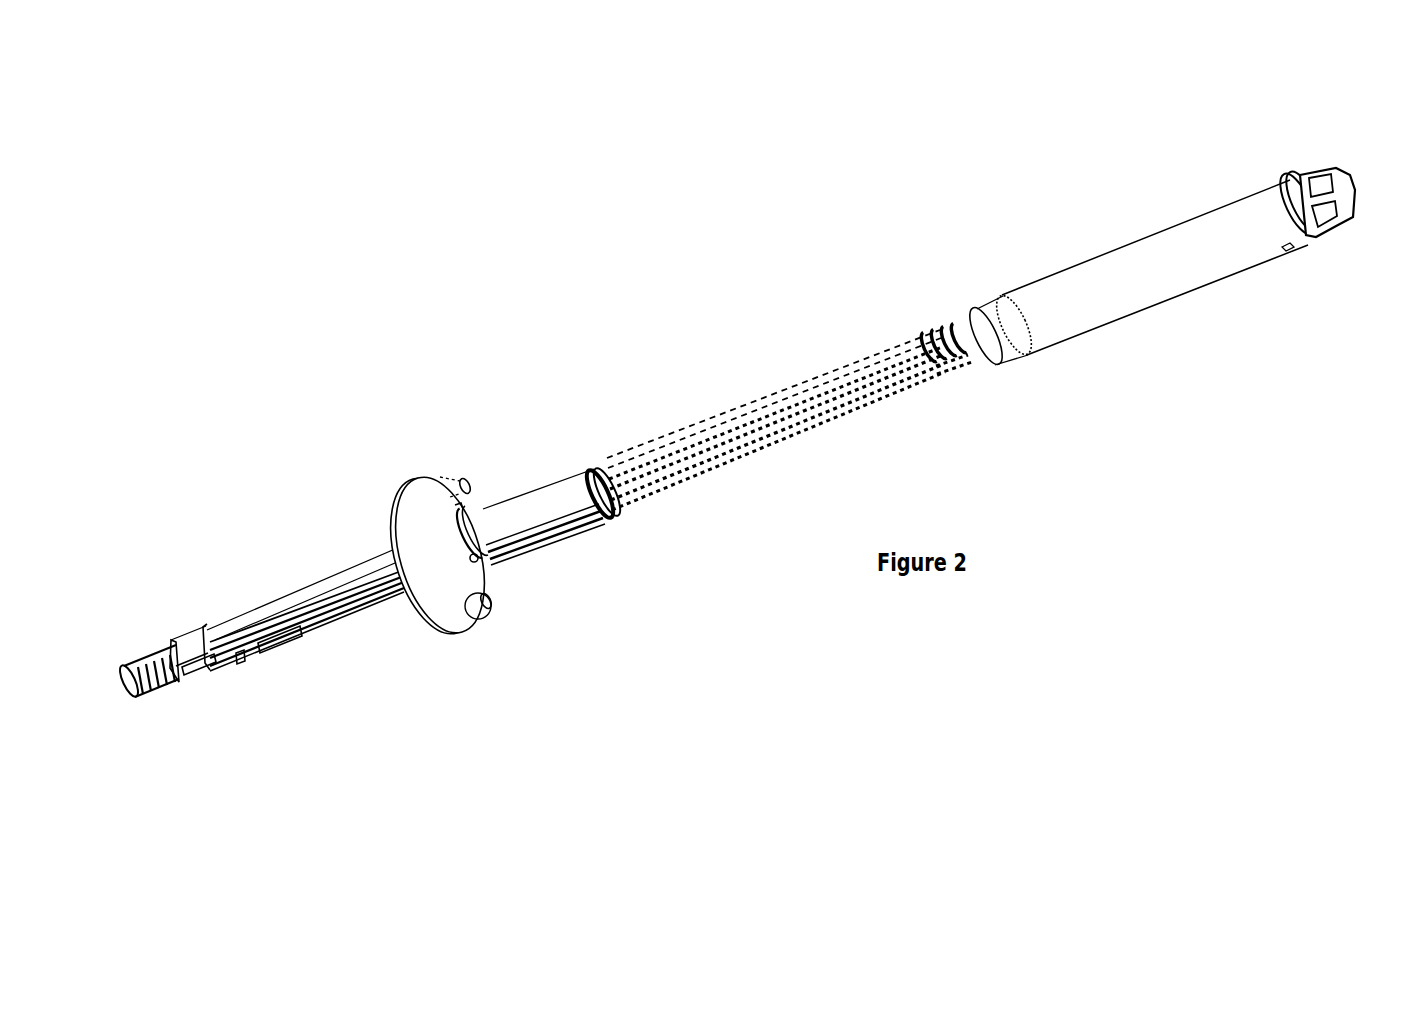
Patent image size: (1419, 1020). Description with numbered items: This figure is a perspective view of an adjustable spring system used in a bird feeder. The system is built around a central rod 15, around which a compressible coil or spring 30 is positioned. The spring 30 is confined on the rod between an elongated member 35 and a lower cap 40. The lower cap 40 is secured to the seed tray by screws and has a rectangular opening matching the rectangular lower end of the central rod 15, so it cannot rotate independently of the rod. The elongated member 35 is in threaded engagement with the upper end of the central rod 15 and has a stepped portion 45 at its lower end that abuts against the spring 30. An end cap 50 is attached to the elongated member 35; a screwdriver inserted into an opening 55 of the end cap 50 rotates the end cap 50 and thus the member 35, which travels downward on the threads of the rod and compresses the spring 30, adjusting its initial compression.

The central rod 15 is at (348, 582).
The spring 30 is at (714, 480).
The elongated member 35 is at (1155, 268).
The lower cap 40 is at (540, 504).
The stepped portion 45 is at (976, 318).
The end cap 50 is at (1298, 161).
The opening 55 is at (1345, 175).